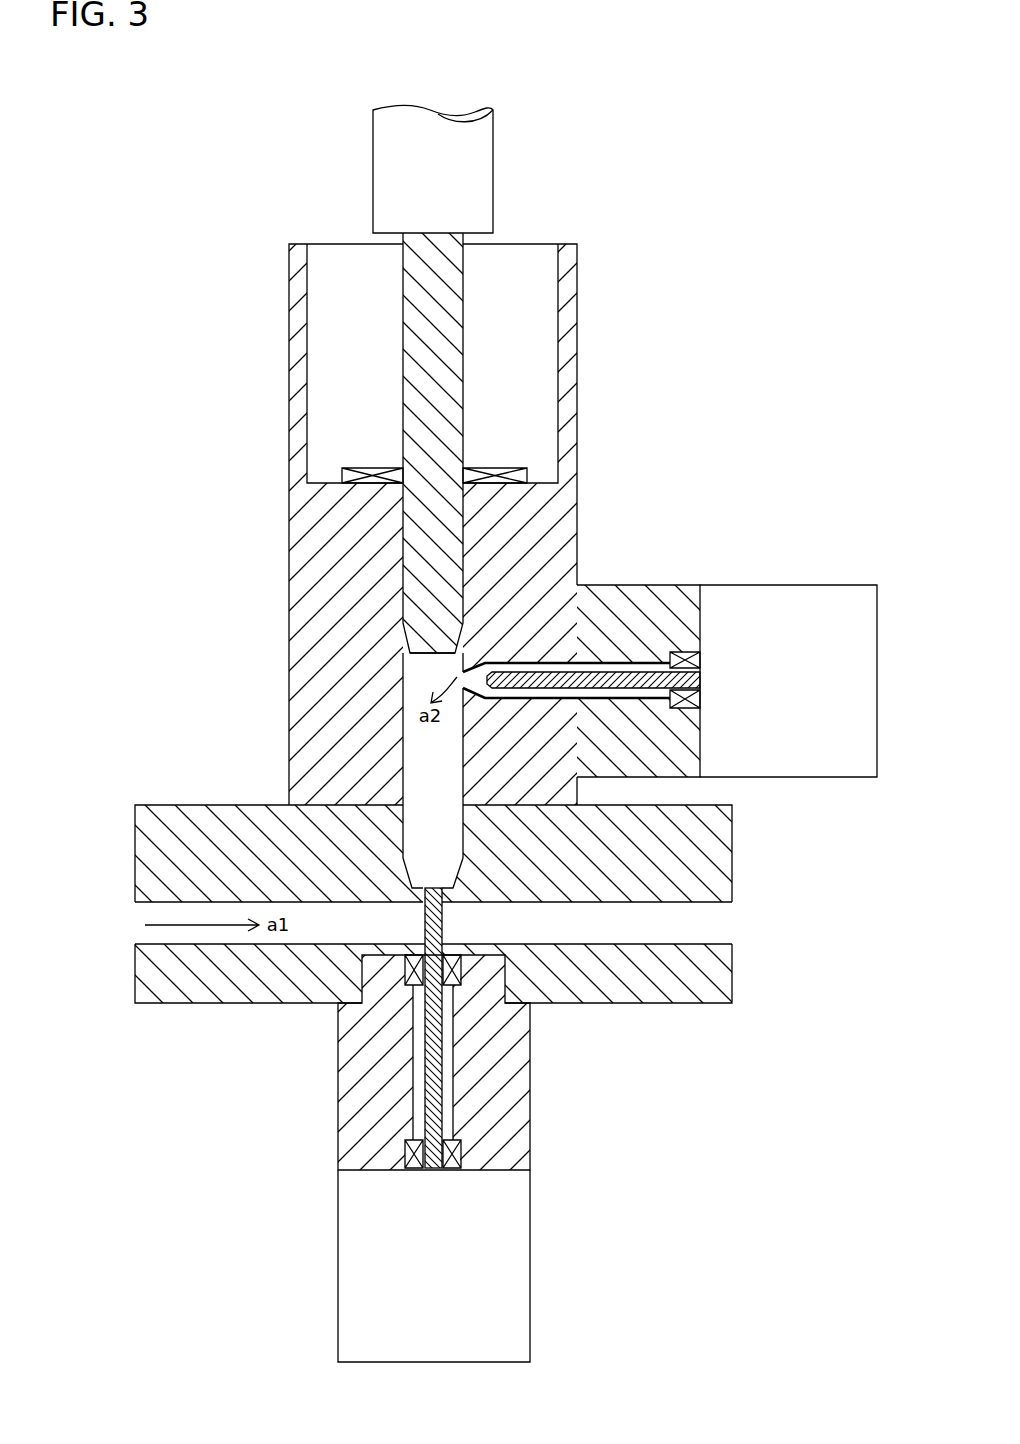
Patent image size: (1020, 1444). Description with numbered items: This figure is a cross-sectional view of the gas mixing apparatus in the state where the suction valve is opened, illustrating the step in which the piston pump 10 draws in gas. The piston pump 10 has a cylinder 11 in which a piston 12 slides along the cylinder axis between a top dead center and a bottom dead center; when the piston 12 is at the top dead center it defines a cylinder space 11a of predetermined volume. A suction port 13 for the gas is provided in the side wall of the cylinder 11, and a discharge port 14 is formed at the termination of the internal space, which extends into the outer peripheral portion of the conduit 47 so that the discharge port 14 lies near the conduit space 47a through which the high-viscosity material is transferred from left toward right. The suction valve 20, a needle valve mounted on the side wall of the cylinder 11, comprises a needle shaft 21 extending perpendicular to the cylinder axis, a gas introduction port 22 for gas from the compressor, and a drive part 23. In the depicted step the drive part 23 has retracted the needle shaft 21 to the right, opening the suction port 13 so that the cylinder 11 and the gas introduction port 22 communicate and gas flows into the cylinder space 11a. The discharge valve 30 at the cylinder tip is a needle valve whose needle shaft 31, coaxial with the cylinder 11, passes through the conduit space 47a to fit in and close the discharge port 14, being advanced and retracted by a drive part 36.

The piston pump 10 is at (288, 477).
The cylinder 11 is at (412, 757).
The cylinder space 11a is at (403, 708).
The piston 12 is at (427, 654).
The suction port 13 is at (458, 677).
The discharge port 14 is at (437, 885).
The suction valve 20 is at (820, 778).
The needle shaft 21 is at (590, 667).
The gas introduction port 22 is at (650, 653).
The drive part 23 is at (802, 585).
The discharge valve 30 is at (337, 1203).
The needle shaft 31 is at (452, 1090).
The drive part 36 is at (530, 1240).
The conduit 47 is at (687, 942).
The conduit space 47a is at (732, 914).